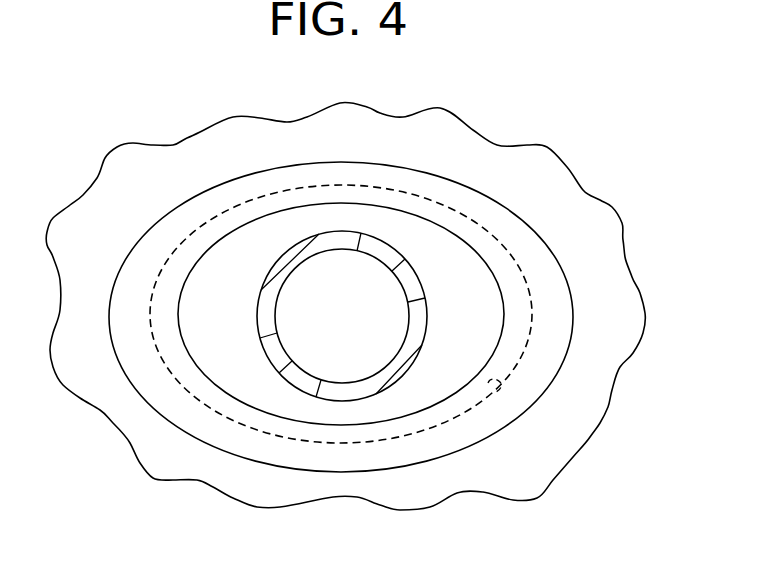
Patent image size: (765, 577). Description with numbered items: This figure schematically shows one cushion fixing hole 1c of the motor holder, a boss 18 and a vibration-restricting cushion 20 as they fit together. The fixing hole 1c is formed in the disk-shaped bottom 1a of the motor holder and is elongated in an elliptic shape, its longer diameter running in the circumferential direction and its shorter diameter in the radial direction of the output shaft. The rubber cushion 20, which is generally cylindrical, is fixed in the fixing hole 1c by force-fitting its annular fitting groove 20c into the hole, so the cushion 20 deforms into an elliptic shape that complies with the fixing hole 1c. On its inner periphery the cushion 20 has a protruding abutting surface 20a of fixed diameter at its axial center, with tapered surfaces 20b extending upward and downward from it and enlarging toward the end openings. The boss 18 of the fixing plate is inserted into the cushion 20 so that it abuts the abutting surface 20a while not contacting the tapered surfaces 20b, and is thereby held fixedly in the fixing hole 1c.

The bottom 1a is at (587, 432).
The cushion fixing hole 1c is at (488, 383).
The boss 18 is at (303, 378).
The vibration-restricting cushion 20 is at (517, 212).
The abutting surface 20a is at (411, 276).
The tapered surface 20b is at (495, 312).
The fitting groove 20c is at (448, 424).